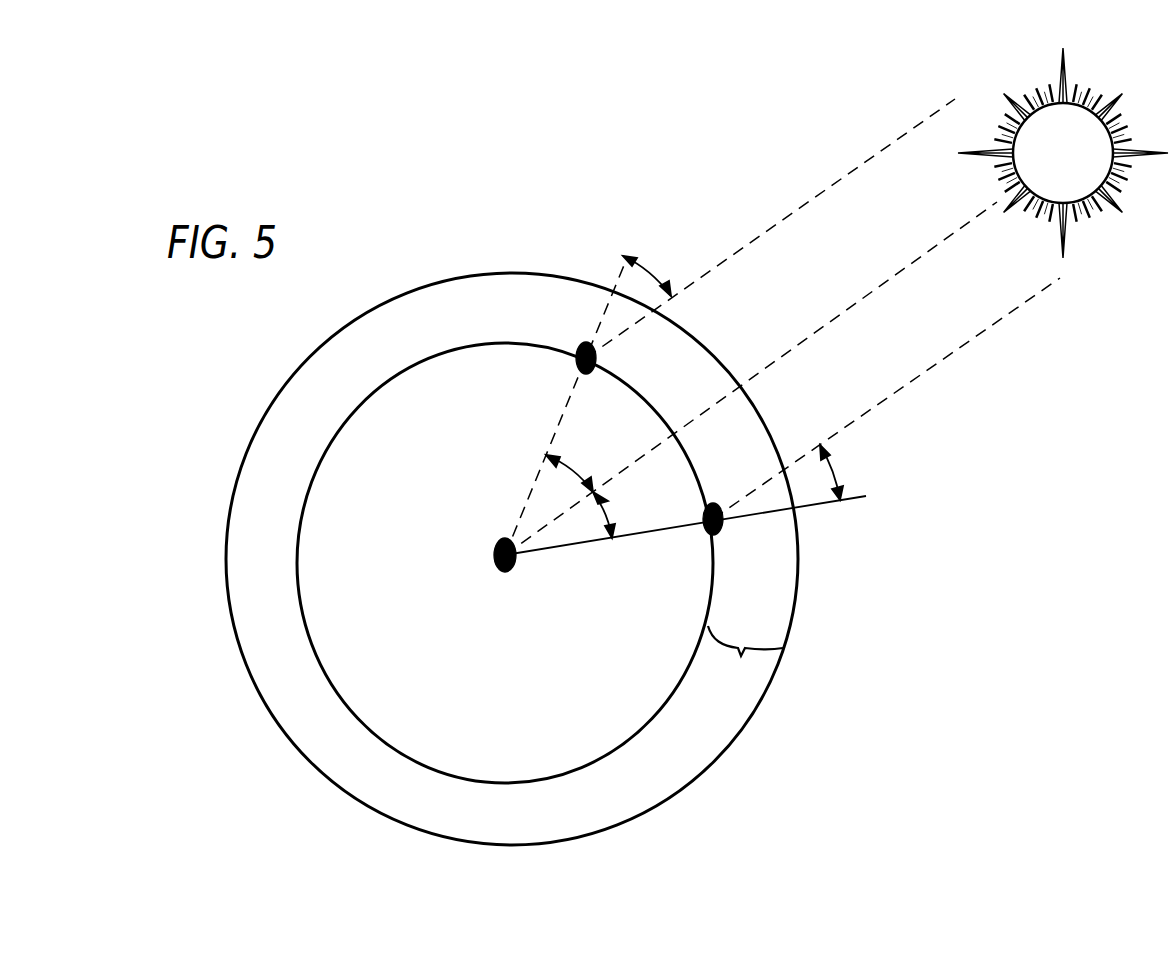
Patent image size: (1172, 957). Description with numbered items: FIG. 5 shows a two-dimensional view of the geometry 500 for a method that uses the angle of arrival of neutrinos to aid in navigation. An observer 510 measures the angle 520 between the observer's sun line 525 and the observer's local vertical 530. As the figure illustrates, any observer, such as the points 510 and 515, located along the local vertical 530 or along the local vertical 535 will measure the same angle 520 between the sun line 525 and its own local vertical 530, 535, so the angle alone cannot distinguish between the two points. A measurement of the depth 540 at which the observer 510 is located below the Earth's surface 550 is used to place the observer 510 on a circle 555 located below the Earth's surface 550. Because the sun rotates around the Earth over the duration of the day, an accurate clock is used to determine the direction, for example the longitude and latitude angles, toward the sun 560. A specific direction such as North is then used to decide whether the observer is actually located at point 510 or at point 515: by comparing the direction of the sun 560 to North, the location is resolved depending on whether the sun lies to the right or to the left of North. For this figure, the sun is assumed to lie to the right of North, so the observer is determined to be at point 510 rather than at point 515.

The geometry 500 is at (782, 820).
The observer 510 is at (720, 528).
The observer 515 is at (581, 344).
The angle 520 is at (662, 287).
The sun line 525 is at (791, 214).
The local vertical 530 is at (632, 537).
The local vertical 535 is at (511, 510).
The depth 540 is at (745, 657).
The Earth's surface 550 is at (763, 693).
The circle 555 is at (694, 653).
The sun 560 is at (777, 357).